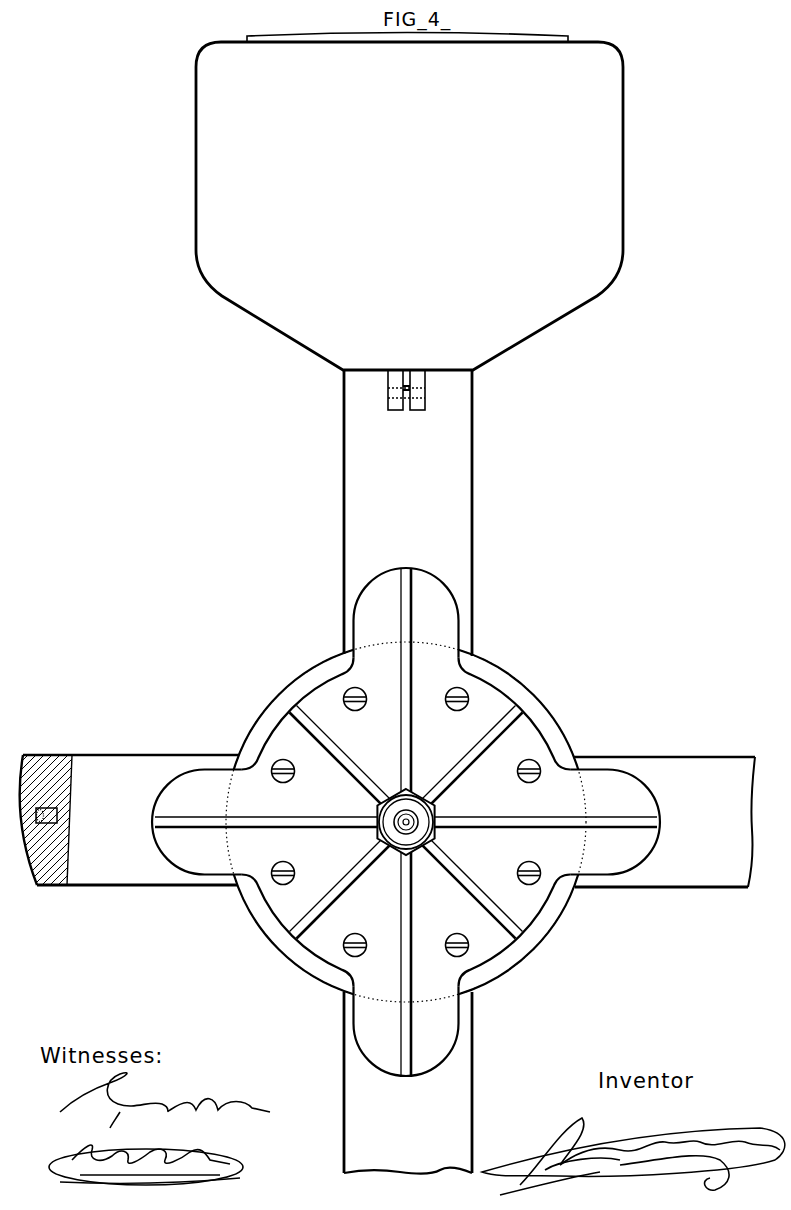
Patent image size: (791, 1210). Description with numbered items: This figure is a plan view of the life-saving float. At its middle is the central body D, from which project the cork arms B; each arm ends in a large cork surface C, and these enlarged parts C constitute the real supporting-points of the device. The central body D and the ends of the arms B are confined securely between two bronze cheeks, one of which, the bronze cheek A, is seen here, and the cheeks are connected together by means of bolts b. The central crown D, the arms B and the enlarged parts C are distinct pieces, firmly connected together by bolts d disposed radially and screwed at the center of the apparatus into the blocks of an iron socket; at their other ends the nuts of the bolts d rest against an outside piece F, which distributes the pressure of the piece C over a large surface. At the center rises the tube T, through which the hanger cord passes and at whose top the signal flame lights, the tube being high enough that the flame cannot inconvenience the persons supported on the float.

The enlarged end surface C is at (409, 206).
The outside piece F is at (318, 41).
The cork arm B is at (377, 772).
The bolt d is at (58, 813).
The bronze cheek A is at (406, 822).
The central body D is at (406, 822).
The bolt b is at (406, 817).
The tube T is at (418, 816).